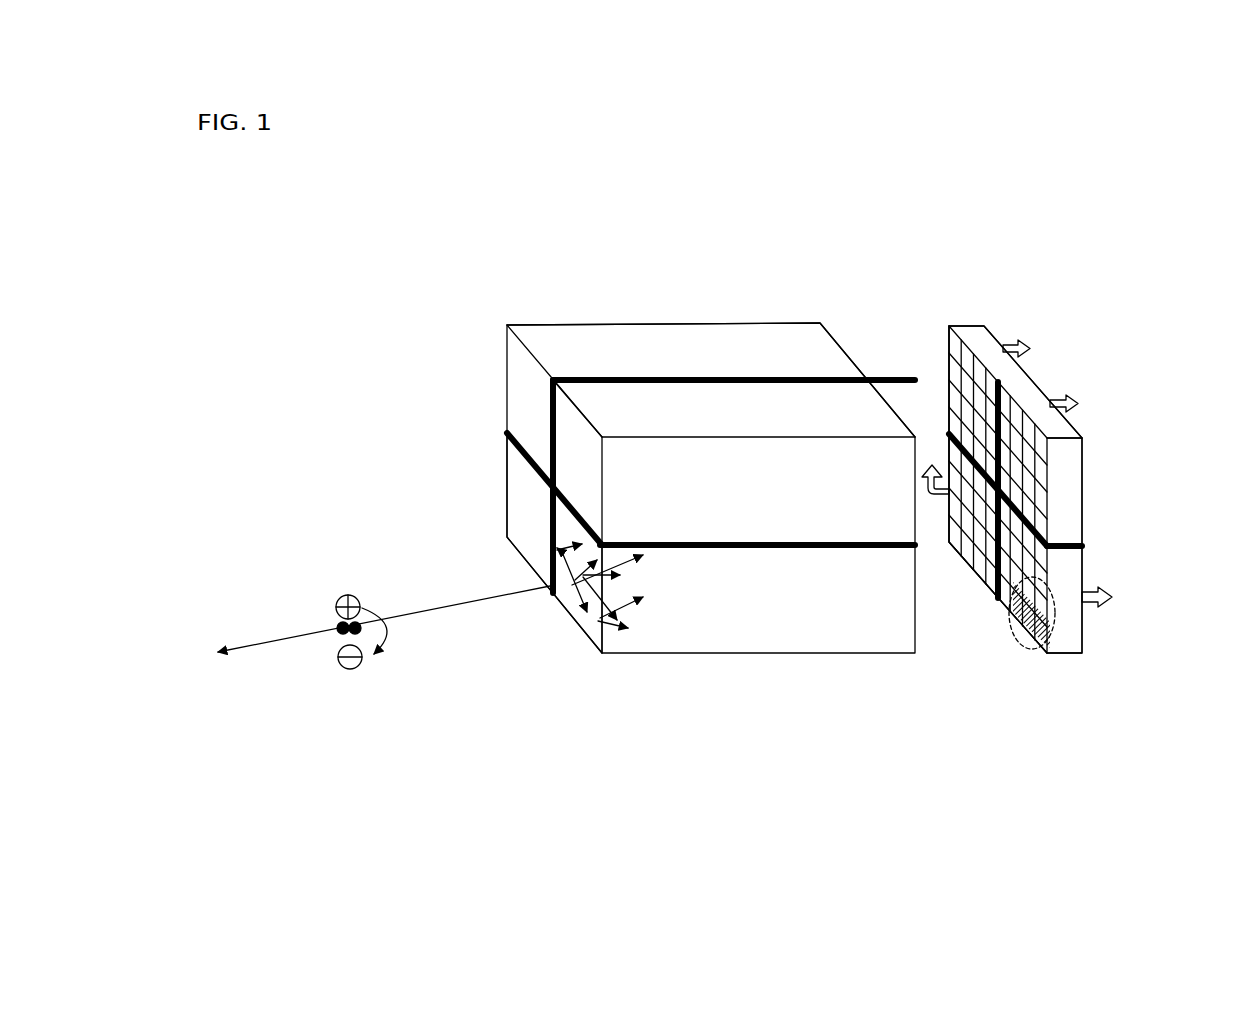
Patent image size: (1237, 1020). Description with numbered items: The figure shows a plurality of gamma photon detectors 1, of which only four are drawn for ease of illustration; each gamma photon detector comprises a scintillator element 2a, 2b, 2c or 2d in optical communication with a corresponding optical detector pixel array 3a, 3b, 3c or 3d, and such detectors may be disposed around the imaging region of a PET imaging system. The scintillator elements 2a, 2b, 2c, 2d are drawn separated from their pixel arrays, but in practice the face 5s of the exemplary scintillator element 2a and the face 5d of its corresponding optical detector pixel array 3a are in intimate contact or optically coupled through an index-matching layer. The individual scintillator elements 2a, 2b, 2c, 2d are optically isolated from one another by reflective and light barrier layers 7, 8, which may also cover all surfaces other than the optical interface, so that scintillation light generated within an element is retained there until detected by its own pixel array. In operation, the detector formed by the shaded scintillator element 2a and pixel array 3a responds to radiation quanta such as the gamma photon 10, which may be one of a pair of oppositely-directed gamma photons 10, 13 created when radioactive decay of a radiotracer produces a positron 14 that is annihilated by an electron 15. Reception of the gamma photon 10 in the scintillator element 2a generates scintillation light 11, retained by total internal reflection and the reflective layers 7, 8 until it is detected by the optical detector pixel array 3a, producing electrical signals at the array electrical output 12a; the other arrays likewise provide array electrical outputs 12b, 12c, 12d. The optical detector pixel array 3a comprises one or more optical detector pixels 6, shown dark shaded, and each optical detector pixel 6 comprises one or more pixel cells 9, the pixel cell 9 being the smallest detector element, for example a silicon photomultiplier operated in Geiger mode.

The gamma photon detector 1 is at (813, 220).
The scintillator element 2a is at (568, 602).
The scintillator element 2b is at (517, 487).
The scintillator element 2c is at (571, 338).
The scintillator element 2d is at (592, 392).
The optical detector pixel array 3a is at (1067, 612).
The optical detector pixel array 3b is at (950, 433).
The optical detector pixel array 3c is at (983, 352).
The optical detector pixel array 3d is at (1072, 500).
The face of scintillator element 5s is at (915, 597).
The face of optical detector pixel array 5d is at (1013, 493).
The optical detector pixel 6 is at (1030, 652).
The reflective and light barrier layer 7 is at (680, 378).
The reflective and light barrier layer 8 is at (747, 547).
The pixel cell 9 is at (1017, 637).
The gamma photon 10 is at (382, 627).
The scintillation light 11 is at (632, 617).
The array electrical output 12a is at (1112, 600).
The array electrical output 12b is at (930, 462).
The array electrical output 12c is at (1033, 348).
The array electrical output 12d is at (1080, 400).
The gamma photon 13 is at (333, 638).
The positron 14 is at (355, 595).
The electron 15 is at (357, 677).